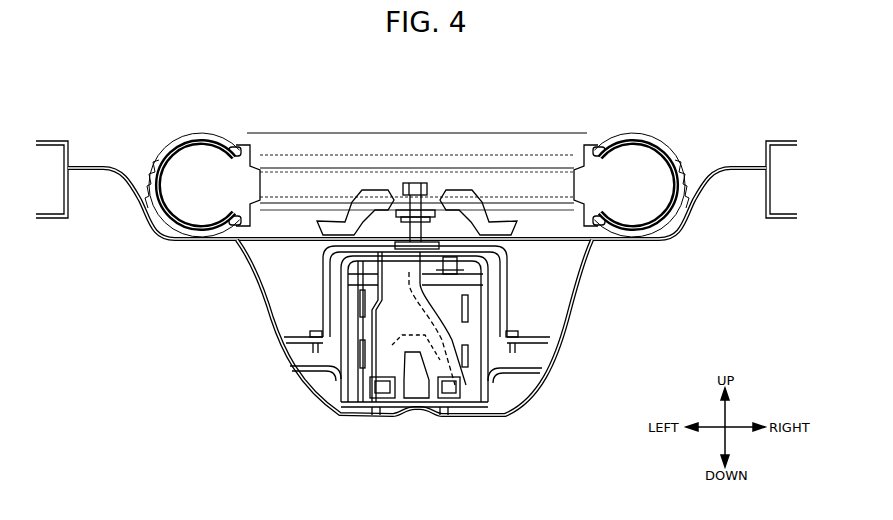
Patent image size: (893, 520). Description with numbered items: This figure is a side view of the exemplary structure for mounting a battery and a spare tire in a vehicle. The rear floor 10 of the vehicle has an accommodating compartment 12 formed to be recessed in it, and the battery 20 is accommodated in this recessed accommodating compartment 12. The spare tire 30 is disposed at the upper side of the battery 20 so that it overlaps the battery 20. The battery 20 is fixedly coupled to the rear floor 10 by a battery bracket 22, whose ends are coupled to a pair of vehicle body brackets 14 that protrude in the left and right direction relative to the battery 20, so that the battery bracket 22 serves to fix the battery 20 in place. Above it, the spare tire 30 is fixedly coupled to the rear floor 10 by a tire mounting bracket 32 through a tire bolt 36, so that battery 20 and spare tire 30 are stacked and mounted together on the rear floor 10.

The rear floor 10 is at (137, 202).
The accommodating compartment 12 is at (353, 417).
The vehicle body brackets 14 is at (301, 343).
The battery 20 is at (448, 313).
The battery bracket 22 is at (488, 313).
The spare tire 30 is at (630, 160).
The tire mounting bracket 32 is at (507, 277).
The tire bolt 36 is at (414, 183).